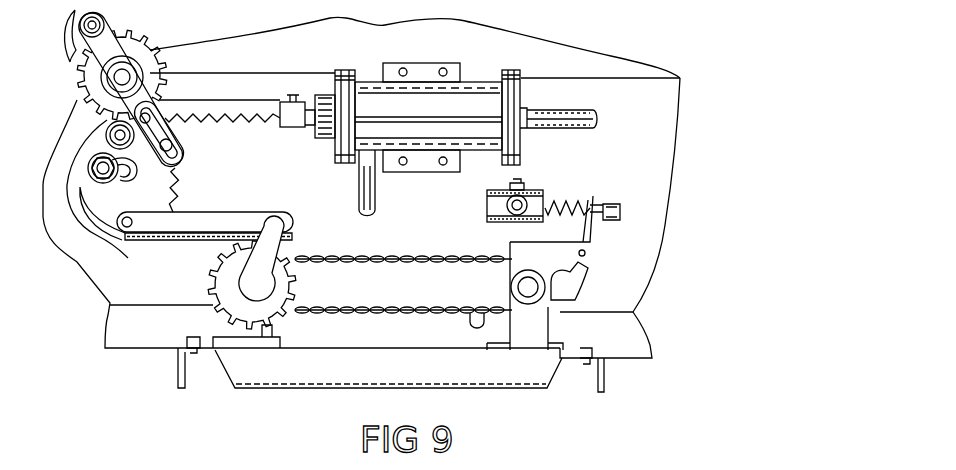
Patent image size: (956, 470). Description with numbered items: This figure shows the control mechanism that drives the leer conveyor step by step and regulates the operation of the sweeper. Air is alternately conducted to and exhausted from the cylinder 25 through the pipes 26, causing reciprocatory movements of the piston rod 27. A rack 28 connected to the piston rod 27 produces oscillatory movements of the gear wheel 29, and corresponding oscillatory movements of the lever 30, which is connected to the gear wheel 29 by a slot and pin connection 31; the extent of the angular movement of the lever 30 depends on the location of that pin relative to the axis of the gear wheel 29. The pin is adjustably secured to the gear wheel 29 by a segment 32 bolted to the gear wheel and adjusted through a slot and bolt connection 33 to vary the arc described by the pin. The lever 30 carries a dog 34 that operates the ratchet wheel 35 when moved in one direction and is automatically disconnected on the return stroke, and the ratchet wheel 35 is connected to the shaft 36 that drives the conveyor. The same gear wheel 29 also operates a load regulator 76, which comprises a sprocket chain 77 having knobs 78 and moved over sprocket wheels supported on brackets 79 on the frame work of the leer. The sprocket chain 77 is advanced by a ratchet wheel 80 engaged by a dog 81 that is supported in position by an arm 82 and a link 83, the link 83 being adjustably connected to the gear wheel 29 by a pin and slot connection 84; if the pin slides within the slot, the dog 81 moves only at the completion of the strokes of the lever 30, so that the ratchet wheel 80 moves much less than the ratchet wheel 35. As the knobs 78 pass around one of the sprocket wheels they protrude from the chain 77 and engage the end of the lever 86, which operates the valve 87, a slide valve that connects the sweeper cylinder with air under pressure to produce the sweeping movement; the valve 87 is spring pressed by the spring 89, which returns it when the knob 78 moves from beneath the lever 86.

The cylinder 25 is at (473, 102).
The pipes 26 is at (577, 117).
The piston rod 27 is at (312, 120).
The rack 28 is at (253, 123).
The gear wheel 29 is at (176, 188).
The lever 30 is at (115, 43).
The slot and pin connection 31 is at (167, 153).
The segment 32 is at (107, 152).
The slot and bolt connection 33 is at (122, 182).
The dog 34 is at (75, 42).
The ratchet wheel 35 is at (153, 47).
The shaft 36 is at (110, 73).
The load regulator 76 is at (382, 297).
The sprocket chain 77 is at (390, 257).
The knobs 78 is at (477, 328).
The brackets 79 is at (258, 342).
The ratchet wheel 80 is at (208, 277).
The dog 81 is at (233, 242).
The arm 82 is at (265, 253).
The link 83 is at (210, 222).
The pin and slot connection 84 is at (125, 232).
The lever 86 is at (570, 285).
The valve 87 is at (535, 200).
The spring 89 is at (570, 197).